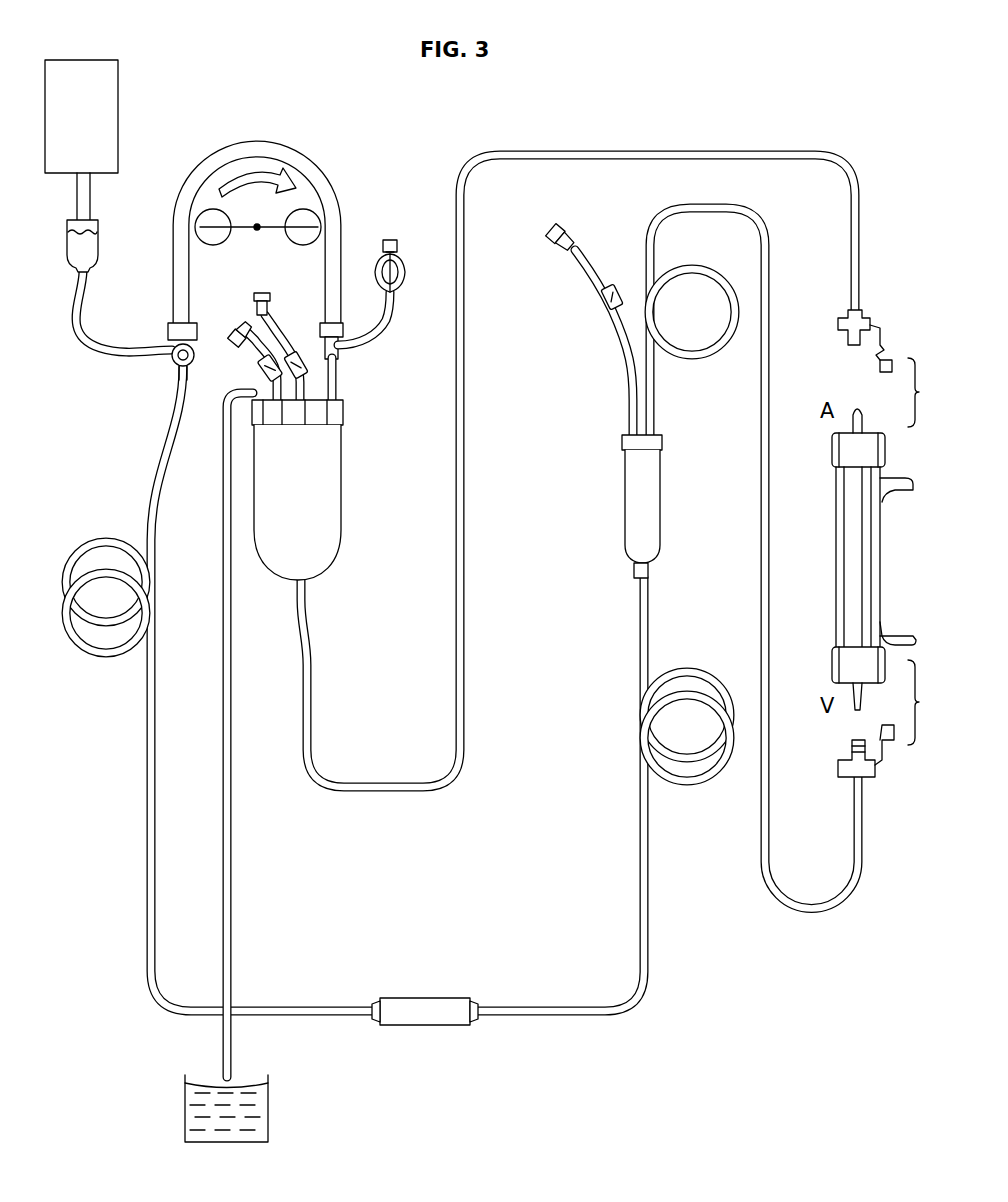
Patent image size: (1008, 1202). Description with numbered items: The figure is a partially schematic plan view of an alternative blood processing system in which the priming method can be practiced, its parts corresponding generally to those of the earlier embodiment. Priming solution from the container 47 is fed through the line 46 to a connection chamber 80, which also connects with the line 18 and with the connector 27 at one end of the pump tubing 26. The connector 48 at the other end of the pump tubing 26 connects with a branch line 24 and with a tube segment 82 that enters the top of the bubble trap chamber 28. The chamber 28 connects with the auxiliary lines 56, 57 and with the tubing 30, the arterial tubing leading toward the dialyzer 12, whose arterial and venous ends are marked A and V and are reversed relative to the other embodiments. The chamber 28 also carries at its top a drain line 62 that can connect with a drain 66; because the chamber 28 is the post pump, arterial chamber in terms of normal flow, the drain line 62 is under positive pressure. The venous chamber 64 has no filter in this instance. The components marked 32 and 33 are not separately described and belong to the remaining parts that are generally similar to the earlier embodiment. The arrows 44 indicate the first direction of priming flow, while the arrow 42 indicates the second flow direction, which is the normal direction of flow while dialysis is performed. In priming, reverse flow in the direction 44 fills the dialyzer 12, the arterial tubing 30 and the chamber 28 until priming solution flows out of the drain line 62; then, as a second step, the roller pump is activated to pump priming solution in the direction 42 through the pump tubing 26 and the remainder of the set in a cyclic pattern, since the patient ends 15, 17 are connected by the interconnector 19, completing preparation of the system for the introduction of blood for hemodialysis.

The dialyzer 12 is at (836, 598).
The patient end 15 is at (376, 1003).
The patient end 17 is at (478, 1003).
The line 18 is at (148, 890).
The interconnector 19 is at (420, 998).
The branch line 24 is at (393, 300).
The pump tubing 26 is at (298, 160).
The connector 27 is at (170, 342).
The bubble trap chamber 28 is at (349, 519).
The tubing 30 is at (465, 355).
The arterial connector 32 is at (866, 318).
The venous connector 33 is at (866, 772).
The arrow 42 is at (245, 178).
The arrows 44 is at (443, 565).
The line 46 is at (95, 300).
The container 47 is at (98, 126).
The connector 48 is at (350, 320).
The auxiliary line 56 is at (255, 298).
The auxiliary line 57 is at (240, 328).
The drain line 62 is at (233, 850).
The venous chamber 64 is at (627, 503).
The drain 66 is at (270, 1105).
The connection chamber 80 is at (181, 378).
The tube segment 82 is at (340, 358).